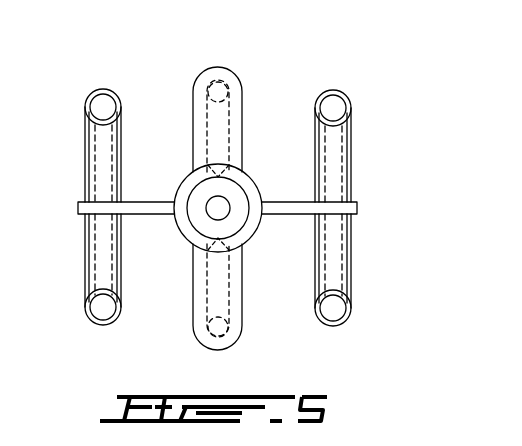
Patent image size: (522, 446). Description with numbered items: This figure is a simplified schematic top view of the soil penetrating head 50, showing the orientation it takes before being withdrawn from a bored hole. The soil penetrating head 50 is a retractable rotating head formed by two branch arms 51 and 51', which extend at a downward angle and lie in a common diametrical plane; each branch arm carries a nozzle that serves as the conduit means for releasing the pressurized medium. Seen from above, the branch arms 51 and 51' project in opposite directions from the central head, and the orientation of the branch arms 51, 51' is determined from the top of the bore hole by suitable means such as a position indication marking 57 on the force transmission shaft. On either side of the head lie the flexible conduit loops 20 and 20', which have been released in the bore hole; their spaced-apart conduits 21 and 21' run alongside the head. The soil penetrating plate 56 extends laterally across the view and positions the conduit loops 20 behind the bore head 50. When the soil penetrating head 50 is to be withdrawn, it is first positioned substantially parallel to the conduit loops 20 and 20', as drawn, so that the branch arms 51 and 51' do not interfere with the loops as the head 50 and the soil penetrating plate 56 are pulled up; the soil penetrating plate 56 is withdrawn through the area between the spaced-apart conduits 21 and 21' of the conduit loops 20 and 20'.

The conduit loop 20 is at (366, 208).
The conduit loop 20' is at (75, 191).
The spaced-apart conduit 21 is at (227, 339).
The spaced-apart conduit 21' is at (237, 74).
The soil penetrating head 50 is at (176, 176).
The branch arm 51 is at (241, 97).
The branch arm 51' is at (260, 310).
The soil penetrating plate 56 is at (140, 214).
The position indication marking 57 is at (222, 160).